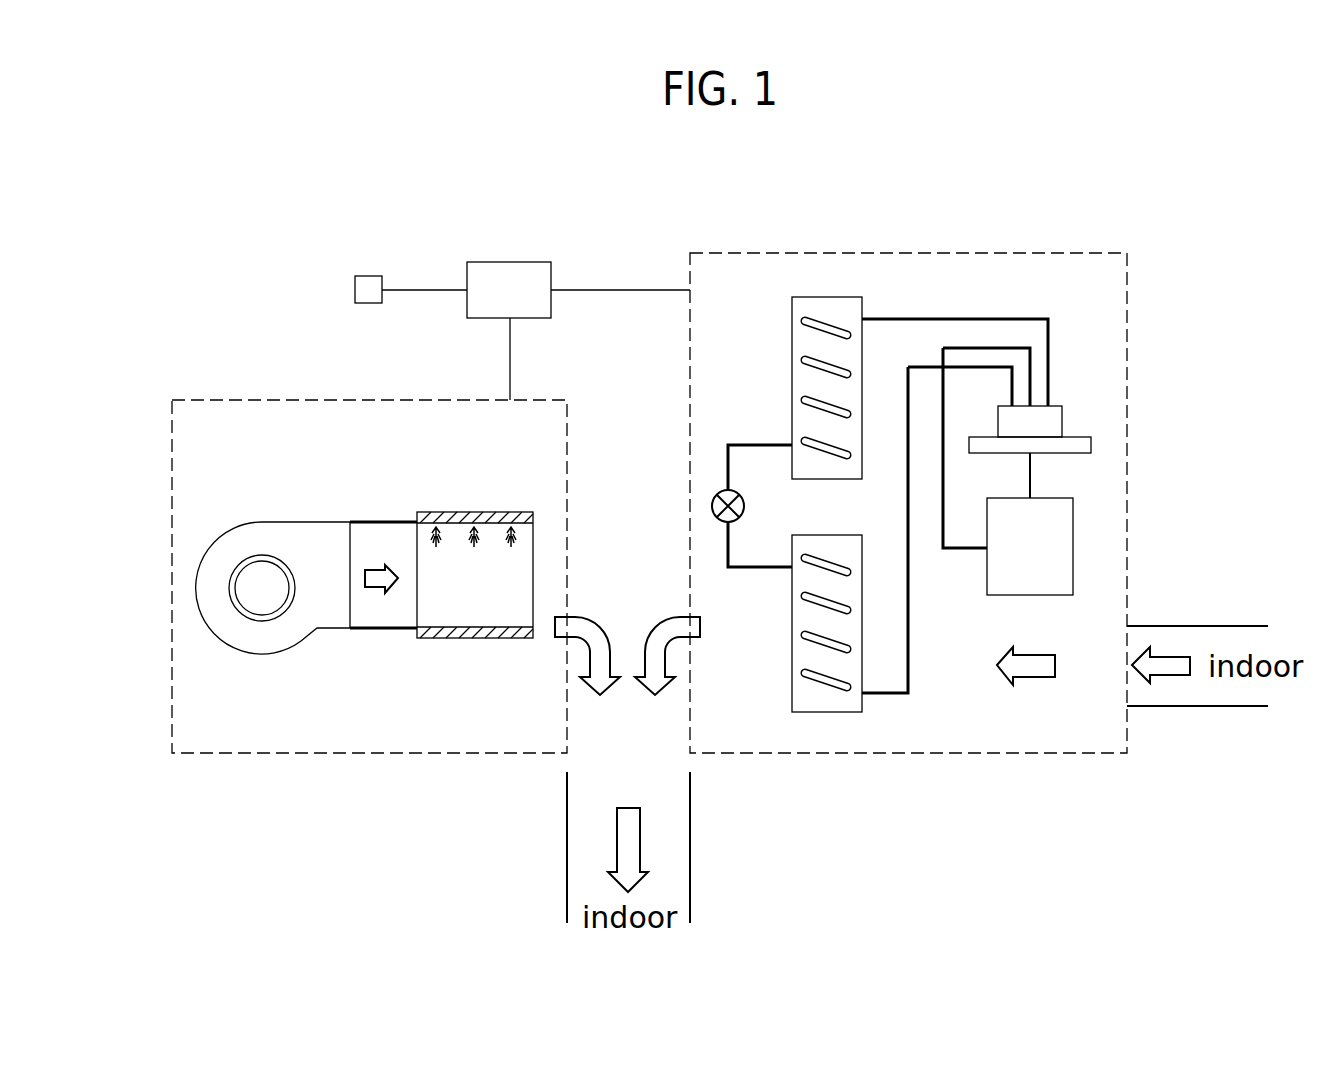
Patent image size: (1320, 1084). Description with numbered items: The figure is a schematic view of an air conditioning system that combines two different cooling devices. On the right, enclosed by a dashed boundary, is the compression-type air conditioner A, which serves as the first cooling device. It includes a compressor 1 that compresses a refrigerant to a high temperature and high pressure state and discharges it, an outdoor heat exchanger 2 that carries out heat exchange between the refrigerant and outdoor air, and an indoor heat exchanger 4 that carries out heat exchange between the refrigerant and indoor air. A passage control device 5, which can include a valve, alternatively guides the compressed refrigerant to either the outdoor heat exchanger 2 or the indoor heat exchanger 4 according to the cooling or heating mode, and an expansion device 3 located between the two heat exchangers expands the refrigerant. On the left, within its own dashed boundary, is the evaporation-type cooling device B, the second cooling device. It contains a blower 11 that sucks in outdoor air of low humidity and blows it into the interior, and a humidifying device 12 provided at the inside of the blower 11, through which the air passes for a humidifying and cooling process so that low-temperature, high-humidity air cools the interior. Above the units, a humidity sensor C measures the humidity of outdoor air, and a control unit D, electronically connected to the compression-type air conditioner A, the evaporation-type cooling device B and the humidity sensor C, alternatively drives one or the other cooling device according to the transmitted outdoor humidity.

The compressor 1 is at (1063, 550).
The outdoor heat exchanger 2 is at (827, 303).
The expansion device 3 is at (713, 504).
The indoor heat exchanger 4 is at (827, 700).
The passage control device 5 is at (1055, 420).
The blower 11 is at (265, 524).
The humidifying device 12 is at (462, 512).
The compression-type air conditioner A is at (993, 253).
The evaporation-type cooling device B is at (241, 400).
The humidity sensor C is at (368, 278).
The control unit D is at (510, 272).